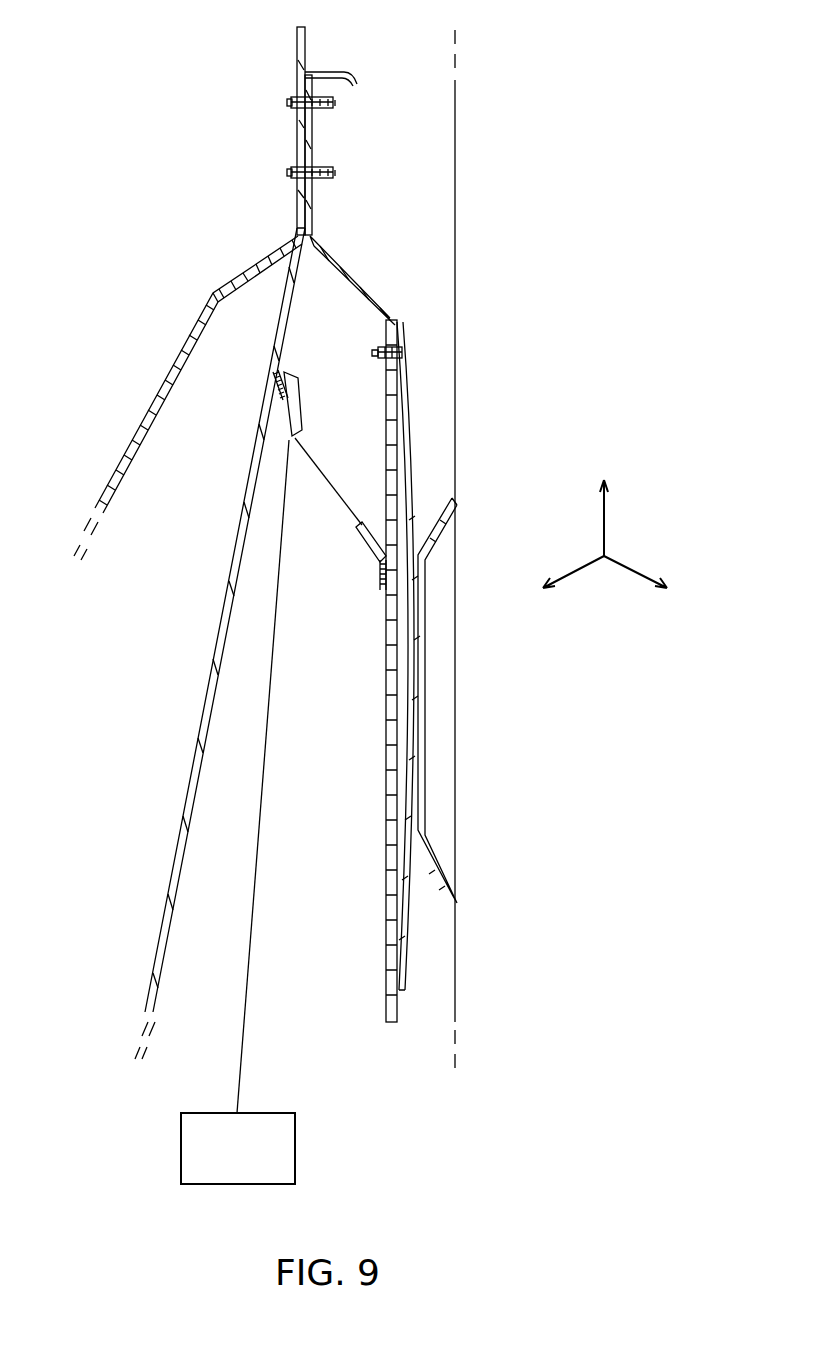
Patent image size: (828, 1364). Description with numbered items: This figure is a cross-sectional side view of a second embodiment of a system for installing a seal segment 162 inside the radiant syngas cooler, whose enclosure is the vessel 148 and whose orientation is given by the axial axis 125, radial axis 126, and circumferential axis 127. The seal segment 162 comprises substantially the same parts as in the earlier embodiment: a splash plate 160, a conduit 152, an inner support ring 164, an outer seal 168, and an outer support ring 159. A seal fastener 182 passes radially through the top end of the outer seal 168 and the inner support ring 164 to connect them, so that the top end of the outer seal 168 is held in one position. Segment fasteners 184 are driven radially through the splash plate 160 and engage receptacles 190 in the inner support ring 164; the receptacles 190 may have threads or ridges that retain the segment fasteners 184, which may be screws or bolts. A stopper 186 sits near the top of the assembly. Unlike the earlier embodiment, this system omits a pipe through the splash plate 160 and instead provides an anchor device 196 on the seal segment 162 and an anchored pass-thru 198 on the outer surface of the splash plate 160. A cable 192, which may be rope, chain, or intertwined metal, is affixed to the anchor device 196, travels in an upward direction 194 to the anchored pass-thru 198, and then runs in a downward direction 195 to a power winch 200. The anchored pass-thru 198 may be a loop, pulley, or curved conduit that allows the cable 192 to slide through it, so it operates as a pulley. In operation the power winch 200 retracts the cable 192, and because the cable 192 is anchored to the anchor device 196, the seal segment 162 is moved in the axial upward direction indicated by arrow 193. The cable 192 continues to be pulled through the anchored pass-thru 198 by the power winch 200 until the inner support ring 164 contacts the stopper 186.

The axial axis 125 is at (605, 523).
The radial axis 126 is at (633, 567).
The circumferential axis 127 is at (580, 570).
The vessel 148 is at (455, 137).
The conduit 152 is at (152, 402).
The outer support ring 159 is at (435, 858).
The splash plate 160 is at (190, 777).
The seal segment 162 is at (420, 1057).
The inner support ring 164 is at (352, 270).
The outer seal 168 is at (412, 476).
The seal fastener 182 is at (376, 352).
The segment fasteners 184 is at (289, 171).
The stopper 186 is at (335, 75).
The receptacles 190 is at (334, 168).
The cable 192 is at (247, 996).
The arrow 193 is at (374, 677).
The upward direction 194 is at (338, 414).
The downward direction 195 is at (257, 628).
The anchor device 196 is at (380, 556).
The anchored pass-thru 198 is at (292, 394).
The power winch 200 is at (181, 1150).